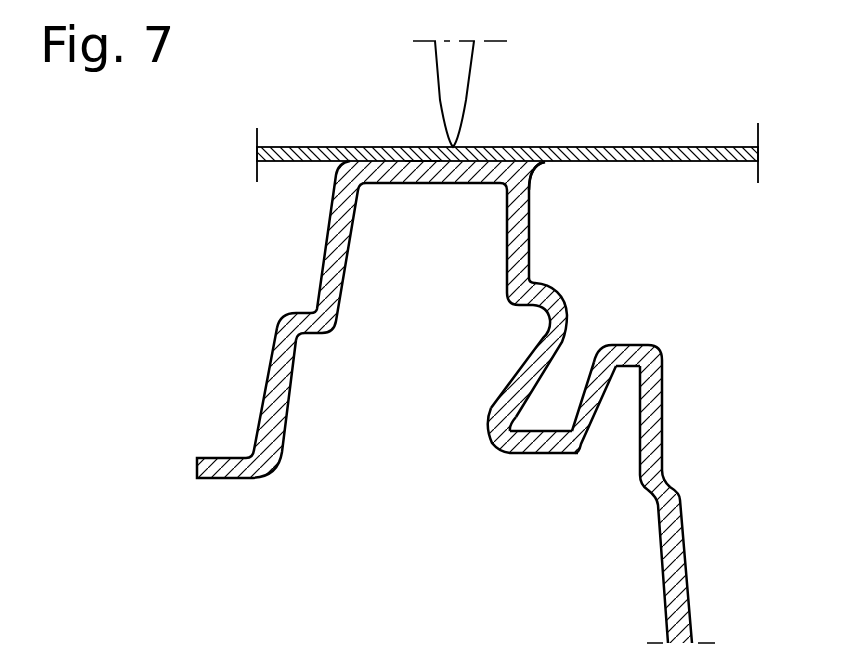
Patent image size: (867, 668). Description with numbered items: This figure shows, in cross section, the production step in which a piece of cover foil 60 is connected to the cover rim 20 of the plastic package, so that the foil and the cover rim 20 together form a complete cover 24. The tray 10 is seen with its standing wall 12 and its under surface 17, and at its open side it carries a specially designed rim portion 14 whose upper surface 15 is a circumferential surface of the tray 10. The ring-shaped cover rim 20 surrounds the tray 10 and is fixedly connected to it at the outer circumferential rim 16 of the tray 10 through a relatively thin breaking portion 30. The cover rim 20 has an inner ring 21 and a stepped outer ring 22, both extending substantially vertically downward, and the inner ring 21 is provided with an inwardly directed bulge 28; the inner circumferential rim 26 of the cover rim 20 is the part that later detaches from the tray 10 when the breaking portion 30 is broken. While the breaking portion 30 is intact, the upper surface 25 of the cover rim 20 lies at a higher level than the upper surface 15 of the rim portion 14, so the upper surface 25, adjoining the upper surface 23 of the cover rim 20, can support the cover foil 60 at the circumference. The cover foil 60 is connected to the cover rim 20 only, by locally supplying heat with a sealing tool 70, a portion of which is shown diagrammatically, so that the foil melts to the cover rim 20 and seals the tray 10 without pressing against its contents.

The tray 10 is at (664, 415).
The standing wall 12 is at (680, 563).
The rim portion 14 is at (612, 437).
The upper surface of the rim portion 15 is at (635, 345).
The outer circumferential rim 16 is at (538, 427).
The under surface of the tray 17 is at (640, 463).
The cover rim 20 is at (333, 232).
The inner ring 21 is at (515, 240).
The outer ring 22 is at (267, 398).
The upper surface of the cover rim 23 is at (524, 170).
The cover 24 is at (346, 132).
The upper surface of the cover rim 25 is at (420, 160).
The inner circumferential rim 26 is at (508, 433).
The bulge 28 is at (558, 307).
The breaking portion 30 is at (515, 432).
The piece of cover foil 60 is at (705, 147).
The tool 70 is at (463, 76).